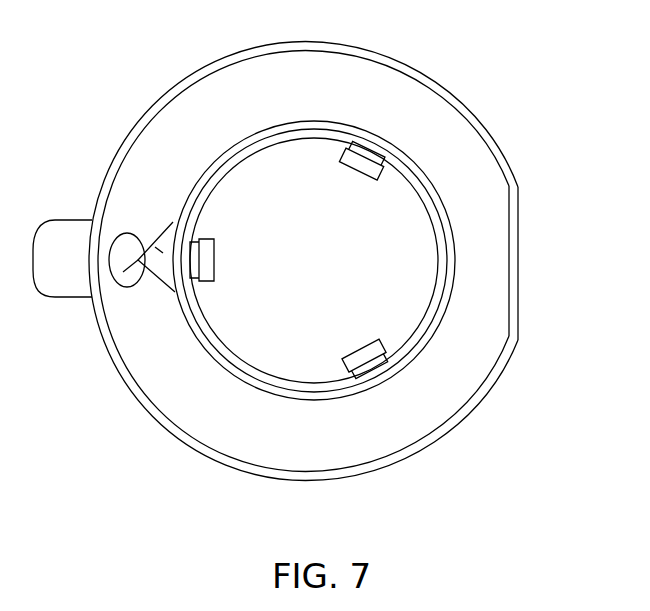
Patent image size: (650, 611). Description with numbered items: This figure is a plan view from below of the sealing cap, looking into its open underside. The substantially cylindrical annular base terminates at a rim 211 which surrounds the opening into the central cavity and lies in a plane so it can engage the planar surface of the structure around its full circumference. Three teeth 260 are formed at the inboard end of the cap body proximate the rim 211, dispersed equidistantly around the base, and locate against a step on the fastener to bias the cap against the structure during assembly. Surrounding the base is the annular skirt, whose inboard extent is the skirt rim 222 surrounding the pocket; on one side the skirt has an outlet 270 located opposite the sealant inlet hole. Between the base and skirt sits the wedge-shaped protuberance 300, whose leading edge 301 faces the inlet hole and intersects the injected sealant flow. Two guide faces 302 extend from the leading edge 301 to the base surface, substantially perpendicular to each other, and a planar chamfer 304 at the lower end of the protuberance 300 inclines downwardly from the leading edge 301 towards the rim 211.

The rim 211 is at (281, 119).
The skirt rim 222 is at (292, 485).
The teeth 260 is at (215, 252).
The outlet 270 is at (520, 258).
The protuberance 300 is at (146, 250).
The leading edge 301 is at (124, 289).
The guide faces 302 is at (173, 228).
The chamfer 304 is at (162, 256).